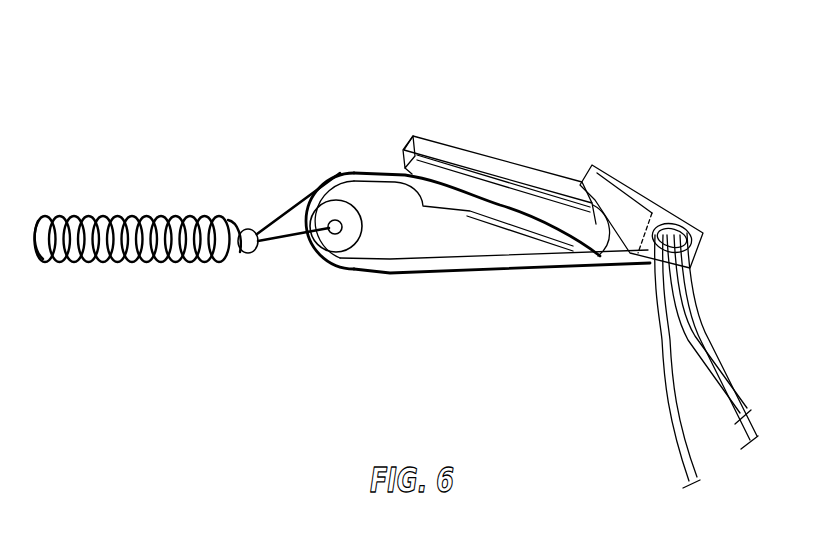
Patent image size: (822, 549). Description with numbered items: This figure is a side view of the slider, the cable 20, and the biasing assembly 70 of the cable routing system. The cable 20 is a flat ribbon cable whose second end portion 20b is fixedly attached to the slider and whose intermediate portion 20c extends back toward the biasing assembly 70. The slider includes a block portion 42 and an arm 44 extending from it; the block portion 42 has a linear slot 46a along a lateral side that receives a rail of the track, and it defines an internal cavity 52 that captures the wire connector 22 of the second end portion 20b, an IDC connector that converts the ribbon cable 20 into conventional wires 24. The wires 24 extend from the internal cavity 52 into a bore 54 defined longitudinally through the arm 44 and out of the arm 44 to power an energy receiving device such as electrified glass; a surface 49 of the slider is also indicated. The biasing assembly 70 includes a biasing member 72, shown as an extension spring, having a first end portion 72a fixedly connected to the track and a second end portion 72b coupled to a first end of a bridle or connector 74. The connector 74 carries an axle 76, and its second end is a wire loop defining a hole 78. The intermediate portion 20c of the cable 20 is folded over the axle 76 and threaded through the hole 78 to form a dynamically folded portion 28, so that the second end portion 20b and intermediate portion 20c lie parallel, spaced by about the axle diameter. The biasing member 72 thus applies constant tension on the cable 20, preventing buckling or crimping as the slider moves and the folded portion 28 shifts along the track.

The cable 20 is at (402, 287).
The second end portion 20b is at (377, 162).
The intermediate portion 20c is at (504, 275).
The wire connector 22 is at (575, 245).
The wire 24 is at (680, 288).
The folded portion 28 is at (306, 208).
The block portion 42 is at (477, 150).
The arm 44 is at (638, 183).
The linear slot 46a is at (431, 146).
The end face of bar 49 is at (566, 154).
The internal cavity 52 is at (467, 192).
The bore 54 is at (692, 248).
The biasing assembly 70 is at (35, 387).
The biasing member 72 is at (105, 206).
The first end portion 72a is at (49, 215).
The second end portion 72b is at (221, 262).
The connector 74 is at (292, 236).
The axle 76 is at (330, 194).
The hole 78 is at (300, 205).